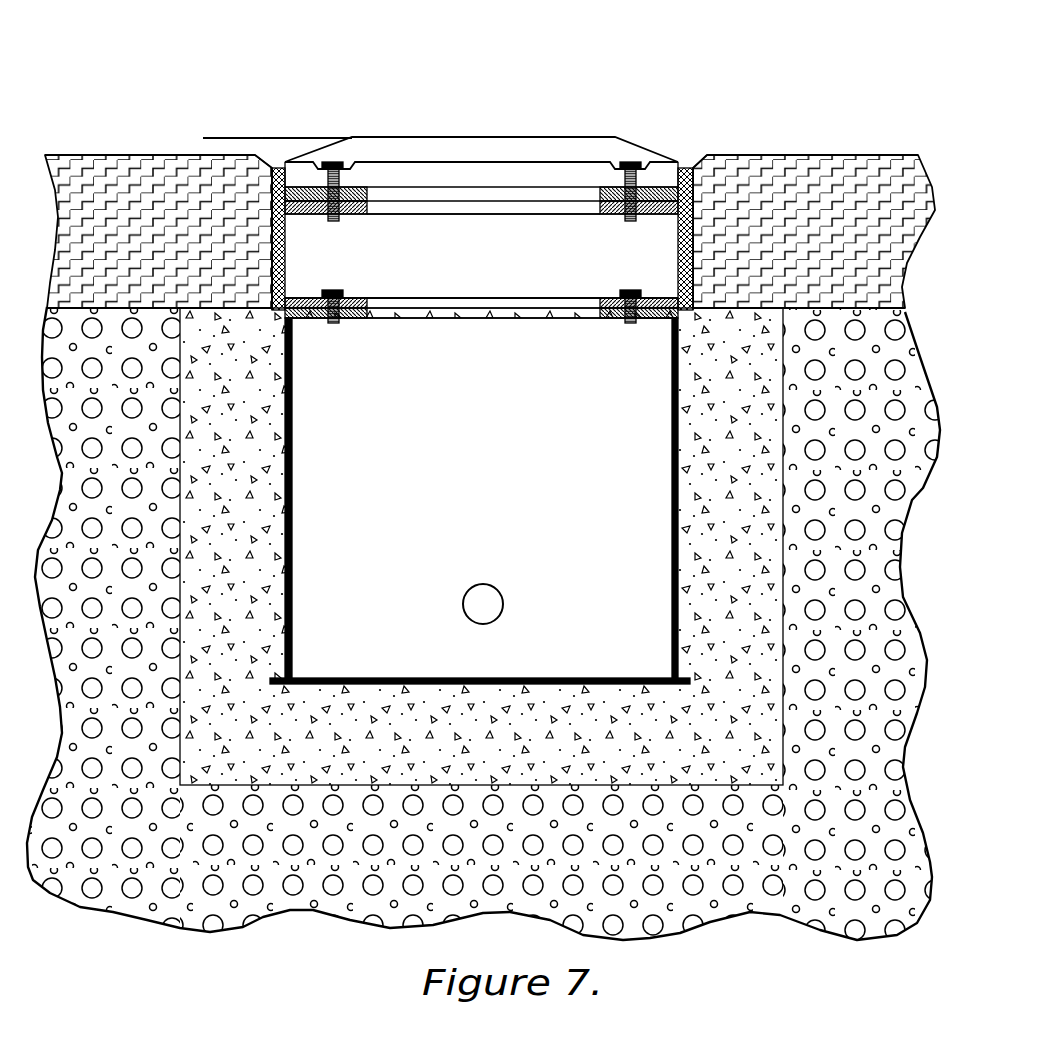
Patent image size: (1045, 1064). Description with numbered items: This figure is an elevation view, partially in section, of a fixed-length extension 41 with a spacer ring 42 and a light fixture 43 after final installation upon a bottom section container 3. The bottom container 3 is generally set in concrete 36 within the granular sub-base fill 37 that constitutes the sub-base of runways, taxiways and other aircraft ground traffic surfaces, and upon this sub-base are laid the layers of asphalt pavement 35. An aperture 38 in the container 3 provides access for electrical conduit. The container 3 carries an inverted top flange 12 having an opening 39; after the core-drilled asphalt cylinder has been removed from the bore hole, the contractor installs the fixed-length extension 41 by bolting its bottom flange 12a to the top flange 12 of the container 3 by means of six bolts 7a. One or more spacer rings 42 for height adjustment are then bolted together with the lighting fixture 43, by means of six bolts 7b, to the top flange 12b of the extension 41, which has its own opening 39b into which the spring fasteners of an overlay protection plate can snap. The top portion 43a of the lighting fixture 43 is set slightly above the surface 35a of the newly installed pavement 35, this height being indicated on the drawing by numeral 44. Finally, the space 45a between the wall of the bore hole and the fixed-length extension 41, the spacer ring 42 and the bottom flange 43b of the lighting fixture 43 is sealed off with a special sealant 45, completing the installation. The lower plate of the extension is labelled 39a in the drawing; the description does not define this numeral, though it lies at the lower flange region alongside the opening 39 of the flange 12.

The bottom section container 3 is at (672, 495).
The bolts 7a is at (333, 325).
The bolts 7b is at (338, 224).
The inverted flange 12 is at (308, 323).
The bottom flange 12a is at (305, 298).
The top flange 12b is at (365, 218).
The asphalt pavement 35 is at (490, 231).
The pavement surface 35a is at (65, 155).
The concrete 36 is at (481, 546).
The granular sub-base fill 37 is at (484, 627).
The aperture 38 is at (498, 593).
The opening 39 is at (410, 323).
The lower plate 39a is at (440, 320).
The opening 39b is at (463, 218).
The fixed-length extension 41 is at (483, 256).
The spacer ring 42 is at (363, 188).
The light fixture 43 is at (452, 137).
The top portion of light fixture 43a is at (215, 138).
The bottom flange of lighting fixture 43b is at (482, 177).
The height indication 44 is at (212, 150).
The sealant 45 is at (277, 167).
The space 45a is at (272, 265).